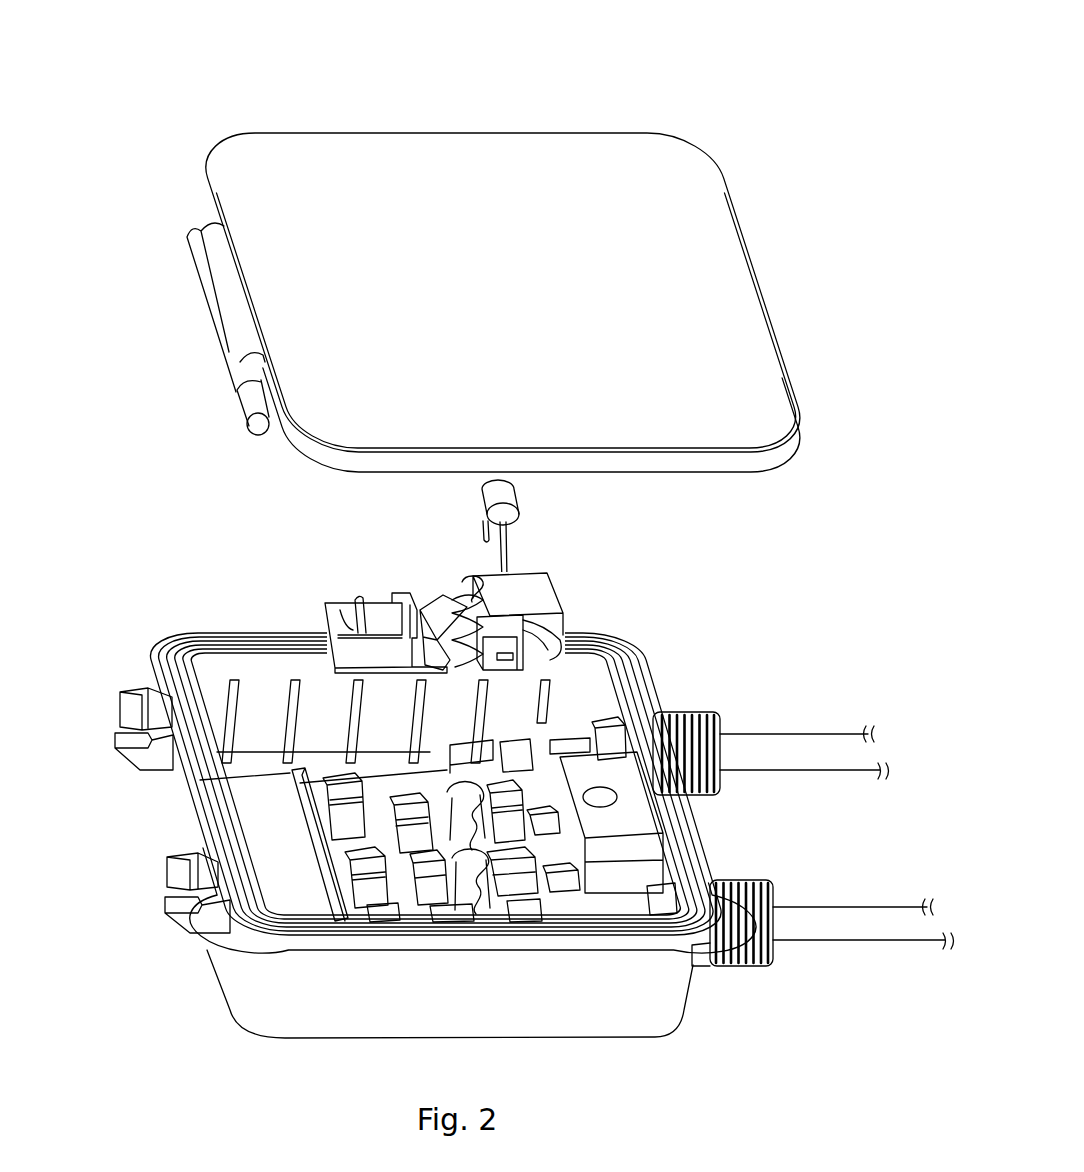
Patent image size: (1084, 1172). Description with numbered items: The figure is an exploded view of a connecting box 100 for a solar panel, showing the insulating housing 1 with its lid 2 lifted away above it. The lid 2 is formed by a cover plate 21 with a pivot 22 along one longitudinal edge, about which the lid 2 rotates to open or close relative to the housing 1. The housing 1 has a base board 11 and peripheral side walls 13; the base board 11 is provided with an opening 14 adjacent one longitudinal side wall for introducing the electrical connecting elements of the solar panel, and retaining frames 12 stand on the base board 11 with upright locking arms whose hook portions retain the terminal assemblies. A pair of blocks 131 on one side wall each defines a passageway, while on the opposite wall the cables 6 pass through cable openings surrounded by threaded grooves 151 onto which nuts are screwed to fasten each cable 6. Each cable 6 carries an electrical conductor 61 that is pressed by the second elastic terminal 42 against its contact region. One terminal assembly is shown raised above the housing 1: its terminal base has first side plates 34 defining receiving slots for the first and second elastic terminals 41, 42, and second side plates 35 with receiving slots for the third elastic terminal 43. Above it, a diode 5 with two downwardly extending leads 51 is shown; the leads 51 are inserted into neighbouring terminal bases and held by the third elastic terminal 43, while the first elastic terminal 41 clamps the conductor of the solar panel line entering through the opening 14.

The connecting box 100 is at (853, 23).
The insulating housing 1 is at (403, 875).
The lid 2 is at (503, 290).
The cover plate 21 is at (366, 107).
The pivot 22 is at (182, 377).
The diode 5 is at (560, 502).
The leads 51 is at (460, 549).
The cable 6 is at (803, 799).
The electrical conductor 61 is at (612, 777).
The base board 11 is at (373, 668).
The retaining frame 12 is at (436, 783).
The side walls 13 is at (466, 971).
The block 131 is at (108, 726).
The opening 14 is at (198, 844).
The threaded grooves 151 is at (743, 1000).
The first side plate 34 is at (373, 610).
The second side plate 35 is at (589, 631).
The first elastic terminal 41 is at (350, 590).
The second elastic terminal 42 is at (587, 599).
The third elastic terminal 43 is at (448, 608).